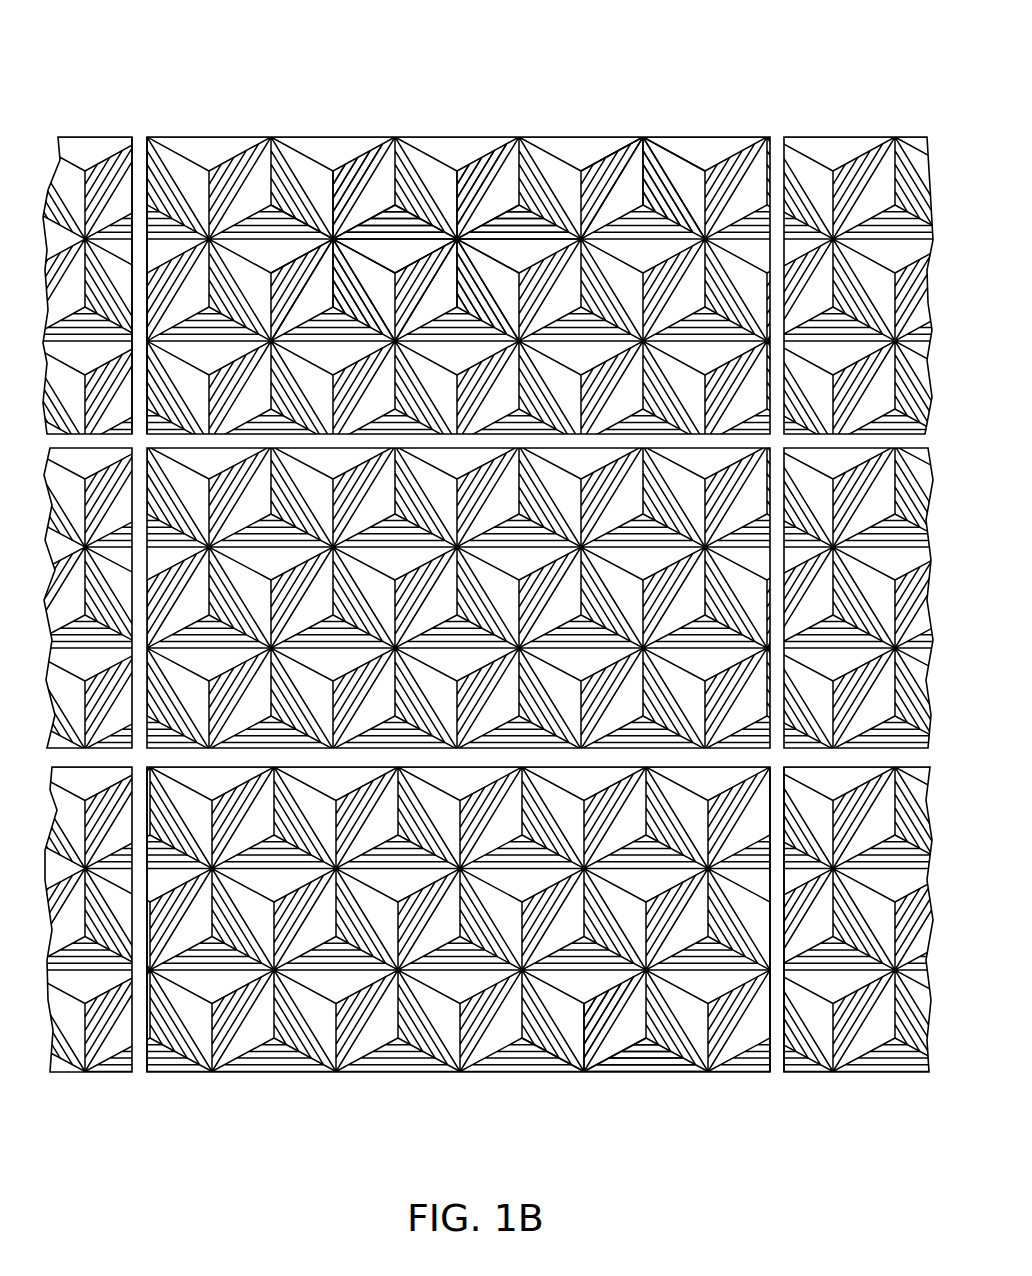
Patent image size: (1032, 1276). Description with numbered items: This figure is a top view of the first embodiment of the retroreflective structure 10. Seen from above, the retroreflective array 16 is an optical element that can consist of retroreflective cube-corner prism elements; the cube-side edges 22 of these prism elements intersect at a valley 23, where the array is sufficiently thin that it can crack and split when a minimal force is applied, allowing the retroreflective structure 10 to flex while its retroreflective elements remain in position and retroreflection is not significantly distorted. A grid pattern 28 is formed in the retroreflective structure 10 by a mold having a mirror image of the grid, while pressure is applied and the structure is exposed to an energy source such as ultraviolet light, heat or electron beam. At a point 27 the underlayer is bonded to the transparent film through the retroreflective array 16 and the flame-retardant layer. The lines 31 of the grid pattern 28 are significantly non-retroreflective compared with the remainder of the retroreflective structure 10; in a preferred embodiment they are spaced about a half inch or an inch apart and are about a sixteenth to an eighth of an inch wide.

The retroreflective structure 10 is at (761, 63).
The retroreflective array 16 is at (409, 1084).
The cube-side edges 22 is at (307, 155).
The valley 23 is at (650, 200).
The point 27 is at (776, 143).
The grid pattern 28 is at (139, 127).
The lines 31 is at (143, 1023).